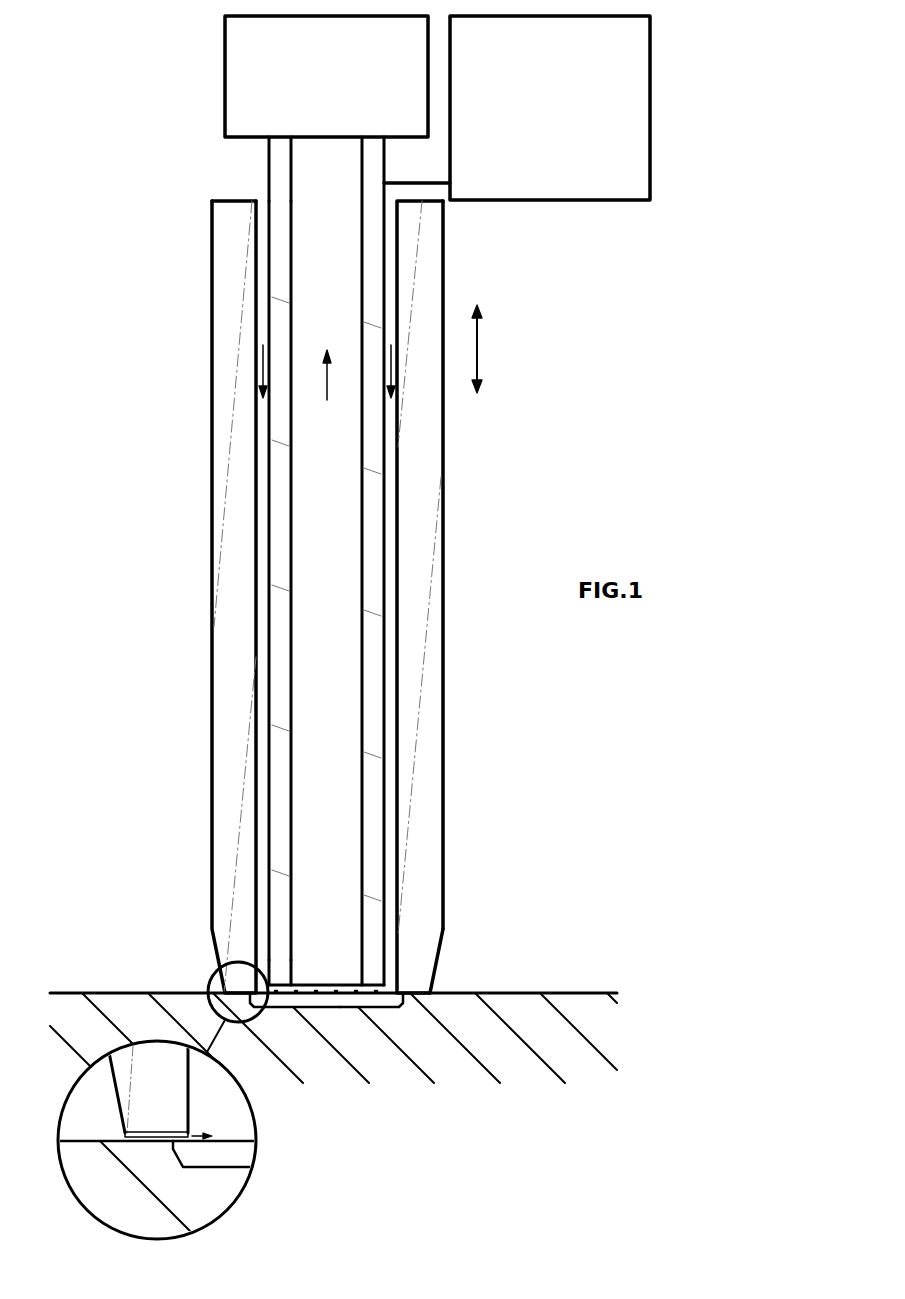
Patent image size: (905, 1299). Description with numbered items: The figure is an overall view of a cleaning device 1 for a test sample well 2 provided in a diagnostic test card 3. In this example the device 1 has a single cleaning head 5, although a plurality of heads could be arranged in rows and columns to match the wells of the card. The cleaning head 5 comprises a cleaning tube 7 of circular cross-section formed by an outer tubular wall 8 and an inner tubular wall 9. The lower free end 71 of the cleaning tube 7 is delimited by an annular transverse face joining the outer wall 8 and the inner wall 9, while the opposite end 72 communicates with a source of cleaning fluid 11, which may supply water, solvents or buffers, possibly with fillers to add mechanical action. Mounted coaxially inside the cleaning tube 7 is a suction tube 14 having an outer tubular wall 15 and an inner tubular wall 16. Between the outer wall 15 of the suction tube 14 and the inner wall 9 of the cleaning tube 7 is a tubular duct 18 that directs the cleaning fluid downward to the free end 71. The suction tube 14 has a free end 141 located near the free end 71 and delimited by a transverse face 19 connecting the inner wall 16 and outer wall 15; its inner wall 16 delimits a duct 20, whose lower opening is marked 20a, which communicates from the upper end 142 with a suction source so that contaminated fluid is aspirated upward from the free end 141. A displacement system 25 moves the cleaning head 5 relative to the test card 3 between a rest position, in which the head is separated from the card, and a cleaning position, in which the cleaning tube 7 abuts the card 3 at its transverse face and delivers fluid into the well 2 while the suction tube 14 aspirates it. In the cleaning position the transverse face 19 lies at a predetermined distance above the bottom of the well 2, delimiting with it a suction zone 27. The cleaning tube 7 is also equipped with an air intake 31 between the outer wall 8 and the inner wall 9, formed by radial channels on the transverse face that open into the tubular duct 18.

The cleaning device 1 is at (112, 141).
The source of cleaning fluid 11 is at (561, 125).
The end of suction tube opposite the free end 142 is at (280, 173).
The end of cleaning tube opposite the free end 72 is at (222, 243).
The displacement system 25 is at (479, 350).
The cleaning head 5 is at (462, 446).
The duct 20 is at (312, 433).
The suction tube 14 is at (280, 488).
The outer tubular wall of suction tube 15 is at (270, 530).
The inner tubular wall of suction tube 16 is at (290, 540).
The tubular duct 18 is at (262, 680).
The cleaning tube 7 is at (420, 628).
The outer tubular wall of cleaning tube 8 is at (444, 668).
The inner tubular wall of cleaning tube 9 is at (400, 703).
The lower end of return channel 20a is at (319, 985).
The free end of suction tube 141 is at (283, 972).
The free end of cleaning tube 71 is at (440, 962).
The diagnostic test card 3 is at (576, 1008).
The test sample well 2 is at (288, 998).
The suction zone 27 is at (318, 1001).
The transverse face of suction tube 19 is at (375, 1000).
The air intake 31 is at (127, 1133).